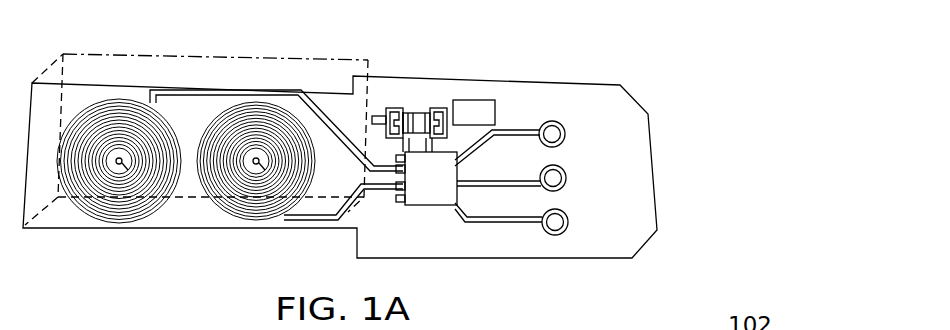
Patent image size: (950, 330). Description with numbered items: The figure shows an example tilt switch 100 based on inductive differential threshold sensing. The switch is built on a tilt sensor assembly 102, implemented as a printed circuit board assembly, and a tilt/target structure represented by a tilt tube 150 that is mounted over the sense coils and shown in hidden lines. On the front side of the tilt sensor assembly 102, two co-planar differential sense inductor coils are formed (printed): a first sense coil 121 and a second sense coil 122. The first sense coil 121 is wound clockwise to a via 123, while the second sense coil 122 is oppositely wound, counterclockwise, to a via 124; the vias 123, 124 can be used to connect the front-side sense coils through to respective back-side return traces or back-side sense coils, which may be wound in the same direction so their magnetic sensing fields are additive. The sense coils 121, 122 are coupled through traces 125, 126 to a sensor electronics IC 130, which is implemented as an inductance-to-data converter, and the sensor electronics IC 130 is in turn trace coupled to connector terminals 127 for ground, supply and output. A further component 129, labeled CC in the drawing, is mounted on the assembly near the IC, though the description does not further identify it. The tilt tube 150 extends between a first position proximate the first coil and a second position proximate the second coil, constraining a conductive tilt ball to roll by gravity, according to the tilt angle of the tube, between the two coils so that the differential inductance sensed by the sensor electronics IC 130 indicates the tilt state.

The tilt switch 100 is at (583, 44).
The tilt sensor assembly 102 is at (662, 120).
The first sense coil 121 is at (128, 100).
The second sense coil 122 is at (293, 110).
The via 123 is at (120, 166).
The via 124 is at (257, 166).
The trace 125 is at (338, 122).
The trace 126 is at (308, 222).
The connector terminals 127 is at (555, 243).
The coupling capacitor 129 is at (473, 100).
The sensor electronics IC 130 is at (443, 208).
The tilt tube 150 is at (173, 58).